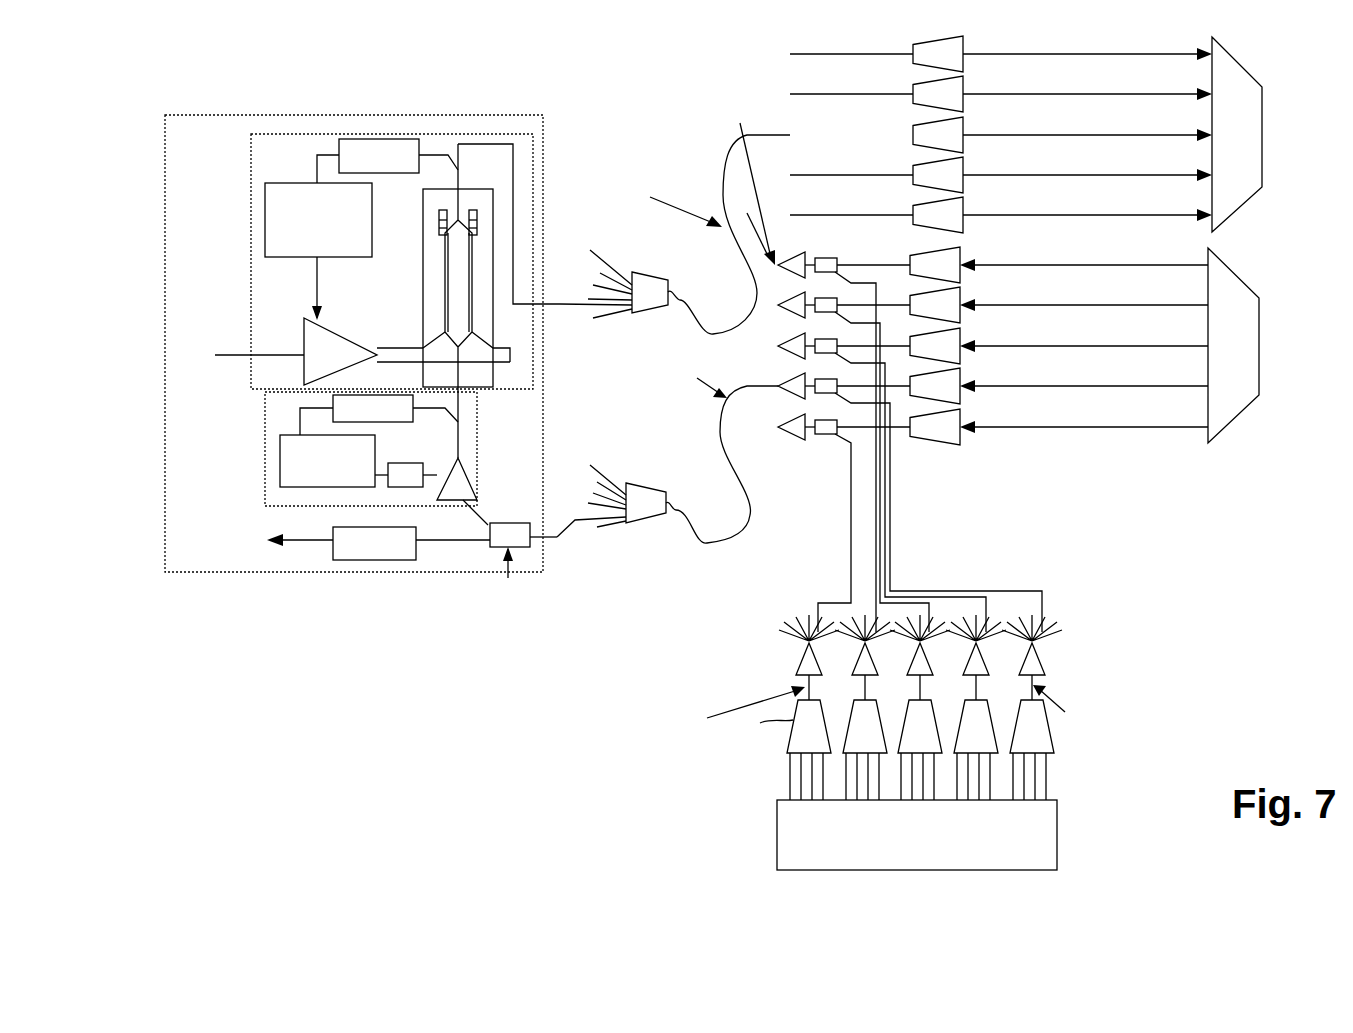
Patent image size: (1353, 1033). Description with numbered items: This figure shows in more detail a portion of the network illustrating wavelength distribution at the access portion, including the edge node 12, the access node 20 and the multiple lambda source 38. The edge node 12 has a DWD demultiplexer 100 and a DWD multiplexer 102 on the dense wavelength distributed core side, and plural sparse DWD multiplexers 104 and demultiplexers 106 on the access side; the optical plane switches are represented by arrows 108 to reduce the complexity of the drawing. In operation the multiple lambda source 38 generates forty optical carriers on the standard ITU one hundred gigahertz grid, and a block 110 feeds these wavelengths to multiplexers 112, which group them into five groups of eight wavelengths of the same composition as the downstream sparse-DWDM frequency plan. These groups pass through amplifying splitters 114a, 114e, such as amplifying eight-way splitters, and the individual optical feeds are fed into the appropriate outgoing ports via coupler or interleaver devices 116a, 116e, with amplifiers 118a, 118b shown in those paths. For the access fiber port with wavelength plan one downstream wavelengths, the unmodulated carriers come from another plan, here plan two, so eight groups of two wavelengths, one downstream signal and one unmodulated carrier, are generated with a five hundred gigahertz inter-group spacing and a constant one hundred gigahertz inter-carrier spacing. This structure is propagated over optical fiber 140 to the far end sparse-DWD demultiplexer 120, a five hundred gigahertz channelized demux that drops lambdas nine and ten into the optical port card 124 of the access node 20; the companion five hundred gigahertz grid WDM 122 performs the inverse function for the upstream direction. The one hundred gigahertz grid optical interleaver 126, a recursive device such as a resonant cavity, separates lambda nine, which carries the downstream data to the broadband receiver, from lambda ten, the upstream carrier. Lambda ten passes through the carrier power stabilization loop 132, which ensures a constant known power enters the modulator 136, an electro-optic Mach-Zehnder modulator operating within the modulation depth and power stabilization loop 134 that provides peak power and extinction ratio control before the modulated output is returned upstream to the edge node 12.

The edge node 12 is at (1200, 468).
The access node 20 is at (338, 617).
The multiple lambda source 38 is at (685, 788).
The DWD demultiplexer 100 is at (1245, 408).
The DWD multiplexer 102 is at (1240, 195).
The sparse DWD multiplexer 104 is at (933, 445).
The sparse DWD demultiplexer 106 is at (942, 45).
The optical plane switches 108 is at (1085, 468).
The receiver array block 110 is at (1057, 838).
The multiplexer 112 is at (795, 717).
The amplifying splitter 114a is at (797, 665).
The amplifying splitter 114e is at (1045, 665).
The coupler or interleaver device 116a is at (823, 434).
The coupler or interleaver device 116e is at (852, 238).
The optical amplifier 118a is at (793, 437).
The optical amplifier 118b is at (782, 394).
The sparse-DWD wavelength distributed demultiplexer 120 is at (640, 478).
The 500 GHz grid WDM 122 is at (668, 290).
The optical port card 124 is at (413, 560).
The 100 GHz grid optical interleaver 126 is at (520, 524).
The carrier power stabilization loop 132 is at (268, 452).
The modulation depth and power stabilization loop 134 is at (253, 246).
The modulator 136 is at (483, 388).
The optical fiber 140 is at (720, 178).